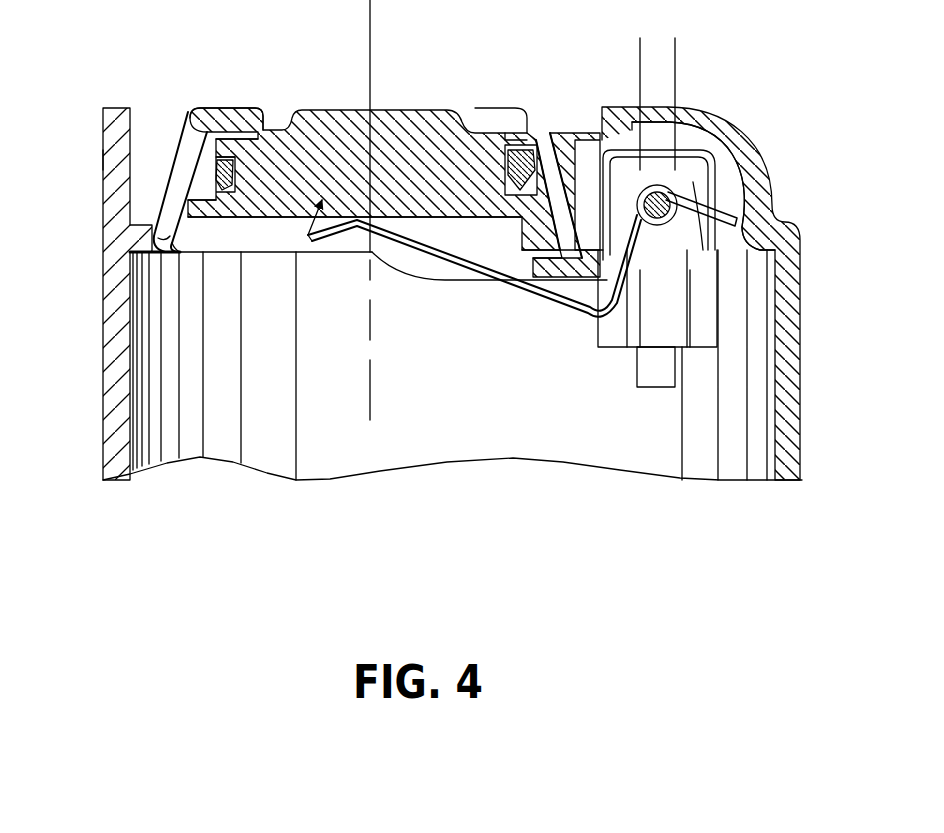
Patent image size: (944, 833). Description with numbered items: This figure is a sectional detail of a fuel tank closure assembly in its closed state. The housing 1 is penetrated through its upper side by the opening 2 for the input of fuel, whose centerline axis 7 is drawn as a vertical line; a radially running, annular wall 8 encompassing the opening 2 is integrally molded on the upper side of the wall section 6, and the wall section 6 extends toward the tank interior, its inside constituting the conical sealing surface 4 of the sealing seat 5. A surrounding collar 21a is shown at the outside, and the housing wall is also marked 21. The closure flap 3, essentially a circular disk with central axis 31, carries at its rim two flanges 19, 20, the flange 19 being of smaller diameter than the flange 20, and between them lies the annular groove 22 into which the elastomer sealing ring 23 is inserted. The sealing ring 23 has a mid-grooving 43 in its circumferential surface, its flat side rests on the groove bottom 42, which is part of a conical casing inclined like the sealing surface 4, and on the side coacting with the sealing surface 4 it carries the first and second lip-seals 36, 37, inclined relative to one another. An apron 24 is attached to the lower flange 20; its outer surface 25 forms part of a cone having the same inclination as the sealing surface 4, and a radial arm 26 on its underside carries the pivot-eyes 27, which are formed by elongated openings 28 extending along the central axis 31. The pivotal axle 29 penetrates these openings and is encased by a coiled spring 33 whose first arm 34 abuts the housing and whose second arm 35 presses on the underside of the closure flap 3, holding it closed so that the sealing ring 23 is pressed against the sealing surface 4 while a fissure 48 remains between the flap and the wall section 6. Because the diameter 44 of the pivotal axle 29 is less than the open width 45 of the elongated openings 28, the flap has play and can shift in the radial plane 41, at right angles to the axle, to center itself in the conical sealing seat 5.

The housing 1 is at (100, 325).
The opening 2 is at (270, 110).
The closure flap 3 is at (308, 243).
The sealing surface 4 is at (176, 255).
The sealing seat 5 is at (242, 205).
The wall section 6 is at (200, 184).
The centerline axis 7 is at (370, 53).
The annular wall 8 is at (214, 110).
The flange 19 is at (525, 130).
The flange 20 is at (178, 250).
The housing wall 21 is at (120, 106).
The surrounding collar 21a is at (110, 160).
The annular groove 22 is at (351, 234).
The sealing ring 23 is at (558, 140).
The apron 24 is at (527, 272).
The outer surface 25 is at (540, 148).
The arm 26 is at (560, 312).
The pivot-eyes 27 is at (700, 182).
The elongated openings 28 is at (683, 108).
The pivotal axle 29 is at (703, 132).
The central axis 31 is at (370, 363).
The coiled spring 33 is at (665, 256).
The first arm 34 is at (750, 202).
The second arm 35 is at (423, 235).
The first lip-seal 36 is at (160, 215).
The second lip-seal 37 is at (150, 190).
The radial plane 41 is at (655, 160).
The groove bottom 42 is at (232, 186).
The mid-grooving 43 is at (236, 160).
The diameter 44 is at (627, 322).
The open width 45 is at (600, 60).
The fissure 48 is at (205, 204).